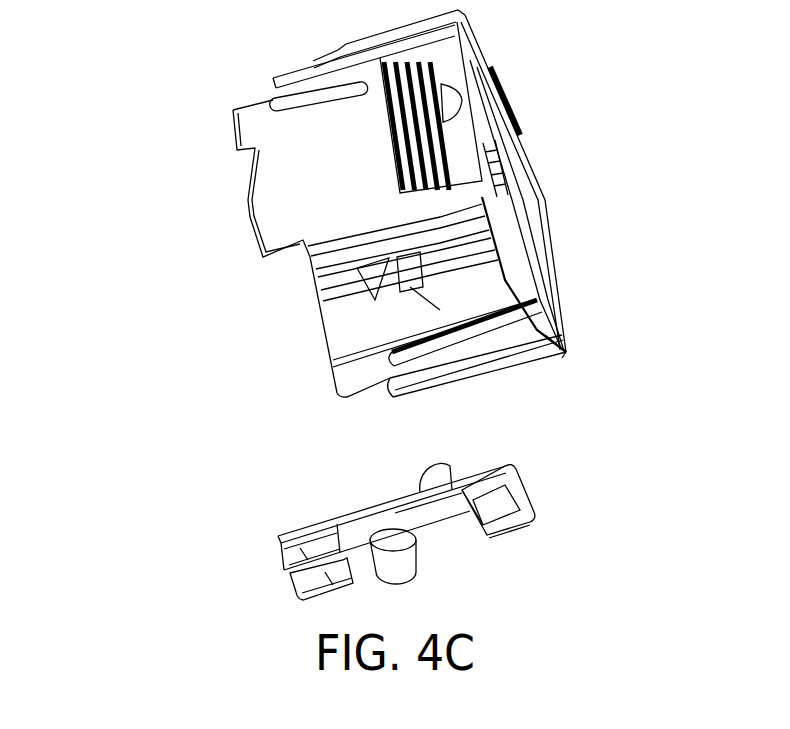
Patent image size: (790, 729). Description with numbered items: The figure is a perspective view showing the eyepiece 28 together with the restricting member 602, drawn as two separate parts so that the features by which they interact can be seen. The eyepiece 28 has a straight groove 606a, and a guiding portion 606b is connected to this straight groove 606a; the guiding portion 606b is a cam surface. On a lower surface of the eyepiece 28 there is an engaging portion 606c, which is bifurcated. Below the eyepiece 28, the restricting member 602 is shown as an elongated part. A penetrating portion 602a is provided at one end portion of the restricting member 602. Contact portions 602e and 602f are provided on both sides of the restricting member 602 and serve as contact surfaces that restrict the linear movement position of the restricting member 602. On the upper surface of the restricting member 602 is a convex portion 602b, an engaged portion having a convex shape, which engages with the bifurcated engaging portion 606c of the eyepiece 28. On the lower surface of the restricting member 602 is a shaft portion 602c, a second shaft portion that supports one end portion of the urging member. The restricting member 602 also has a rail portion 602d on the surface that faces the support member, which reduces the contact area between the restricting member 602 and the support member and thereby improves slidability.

The eyepiece 28 is at (290, 66).
The straight groove 606a is at (270, 98).
The guiding portion 606b is at (253, 170).
The engaging portion 606c is at (567, 354).
The restricting member 602 is at (270, 520).
The penetrating portion 602a is at (512, 490).
The convex portion 602b is at (445, 472).
The shaft portion 602c is at (402, 570).
The rail portion 602d is at (442, 535).
The contact portion 602e is at (500, 531).
The contact portion 602f is at (288, 578).